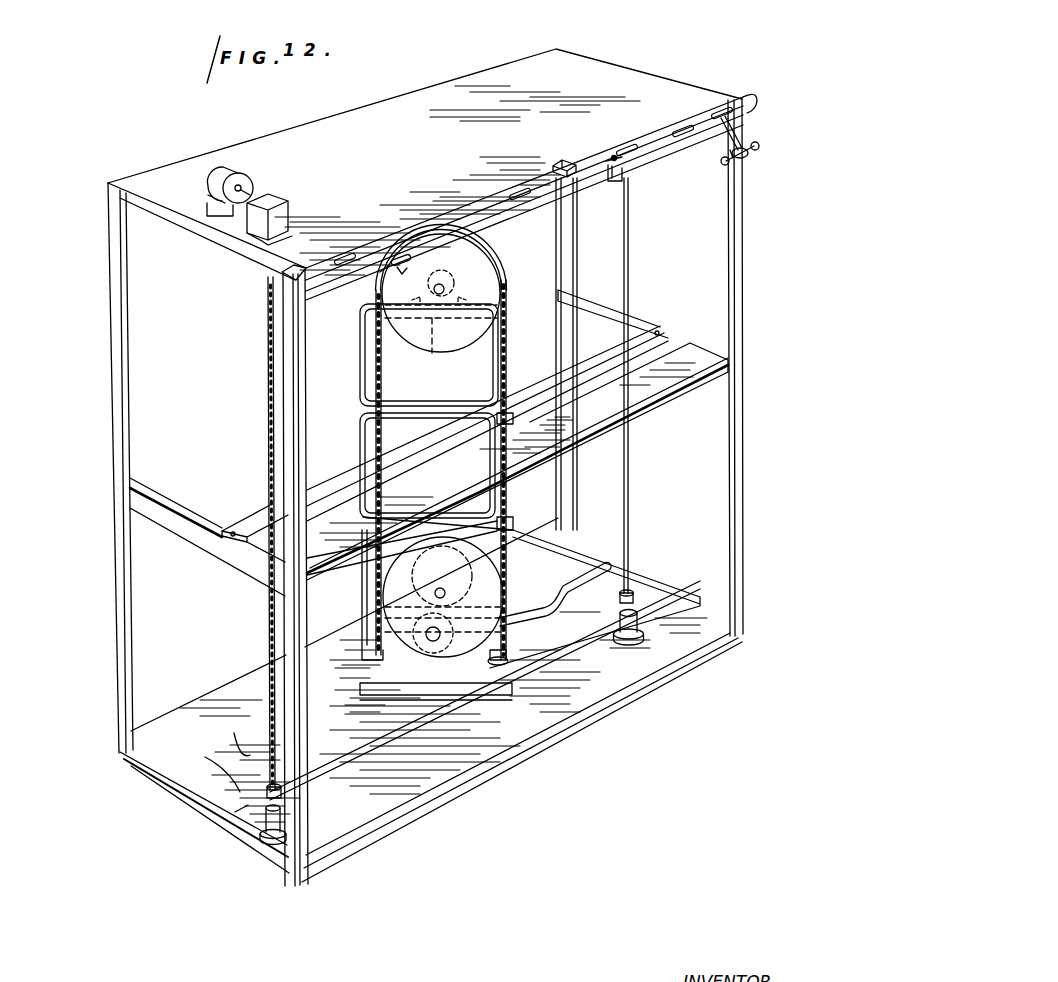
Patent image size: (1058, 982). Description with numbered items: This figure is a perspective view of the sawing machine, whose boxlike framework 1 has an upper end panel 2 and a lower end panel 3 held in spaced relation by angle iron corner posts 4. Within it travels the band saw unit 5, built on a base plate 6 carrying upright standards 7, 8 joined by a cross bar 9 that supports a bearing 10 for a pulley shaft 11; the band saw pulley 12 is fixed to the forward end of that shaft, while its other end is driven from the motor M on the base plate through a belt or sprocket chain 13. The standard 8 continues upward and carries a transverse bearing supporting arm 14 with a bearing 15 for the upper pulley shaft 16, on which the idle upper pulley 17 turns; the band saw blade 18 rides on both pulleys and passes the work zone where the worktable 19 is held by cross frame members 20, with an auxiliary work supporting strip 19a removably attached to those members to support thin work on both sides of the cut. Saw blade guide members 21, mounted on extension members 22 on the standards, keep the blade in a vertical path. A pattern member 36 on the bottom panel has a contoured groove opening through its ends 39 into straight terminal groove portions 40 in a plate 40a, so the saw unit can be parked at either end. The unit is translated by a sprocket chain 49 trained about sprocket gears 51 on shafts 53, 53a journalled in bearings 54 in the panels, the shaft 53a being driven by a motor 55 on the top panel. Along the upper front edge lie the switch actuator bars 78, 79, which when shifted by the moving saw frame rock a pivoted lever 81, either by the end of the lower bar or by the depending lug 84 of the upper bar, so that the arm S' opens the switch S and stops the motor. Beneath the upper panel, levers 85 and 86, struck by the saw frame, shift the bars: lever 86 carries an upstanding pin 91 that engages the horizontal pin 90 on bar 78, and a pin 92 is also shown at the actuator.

The framework 1 is at (99, 483).
The upper end panel 2 is at (463, 80).
The lower end panel 3 is at (170, 724).
The corner post 4 is at (107, 253).
The band saw unit 5 is at (352, 384).
The base plate 6 is at (375, 696).
The upright arm or standard 7 is at (531, 626).
The upright arm or standard 8 is at (363, 586).
The cross bar 9 is at (365, 612).
The journal or bearing 10 is at (440, 590).
The pulley shaft 11 is at (462, 604).
The band saw pulley 12 is at (505, 557).
The gearing, belt or sprocket chain 13 is at (415, 581).
The transverse bearing supporting arm 14 is at (435, 353).
The bearing 15 is at (448, 289).
The upper saw pulley shaft 16 is at (441, 284).
The upper pulley 17 is at (402, 272).
The band saw blade 18 is at (372, 432).
The worktable 19 is at (675, 350).
The auxiliary work supporting strip 19a is at (250, 525).
The cross frame members 20 is at (158, 500).
The saw blade guide members 21 is at (513, 413).
The extension members 22 is at (432, 412).
The pattern member 36 is at (336, 700).
The ends of the pattern piece 39 is at (233, 734).
The straight terminal groove portions 40 is at (209, 765).
The plate 40a is at (238, 812).
The sprocket chain 49 is at (577, 635).
The sprocket gears 51 is at (630, 597).
The shaft 53 is at (632, 245).
The shaft 53a is at (268, 445).
The bearings 54 is at (634, 630).
The motor 55 is at (250, 179).
The upper bar 78 is at (652, 137).
The lower bar 79 is at (496, 207).
The pivoted lever 81 is at (720, 138).
The depending lug 84 is at (752, 90).
The pivotally mounted lever 85 is at (380, 272).
The pivotally mounted lever 86 is at (611, 183).
The horizontally projecting pin 90 is at (596, 161).
The upstanding pin 91 is at (411, 259).
The pin 92 is at (632, 162).
The switch member S is at (730, 174).
The arm S' is at (709, 169).
The motor M is at (400, 665).